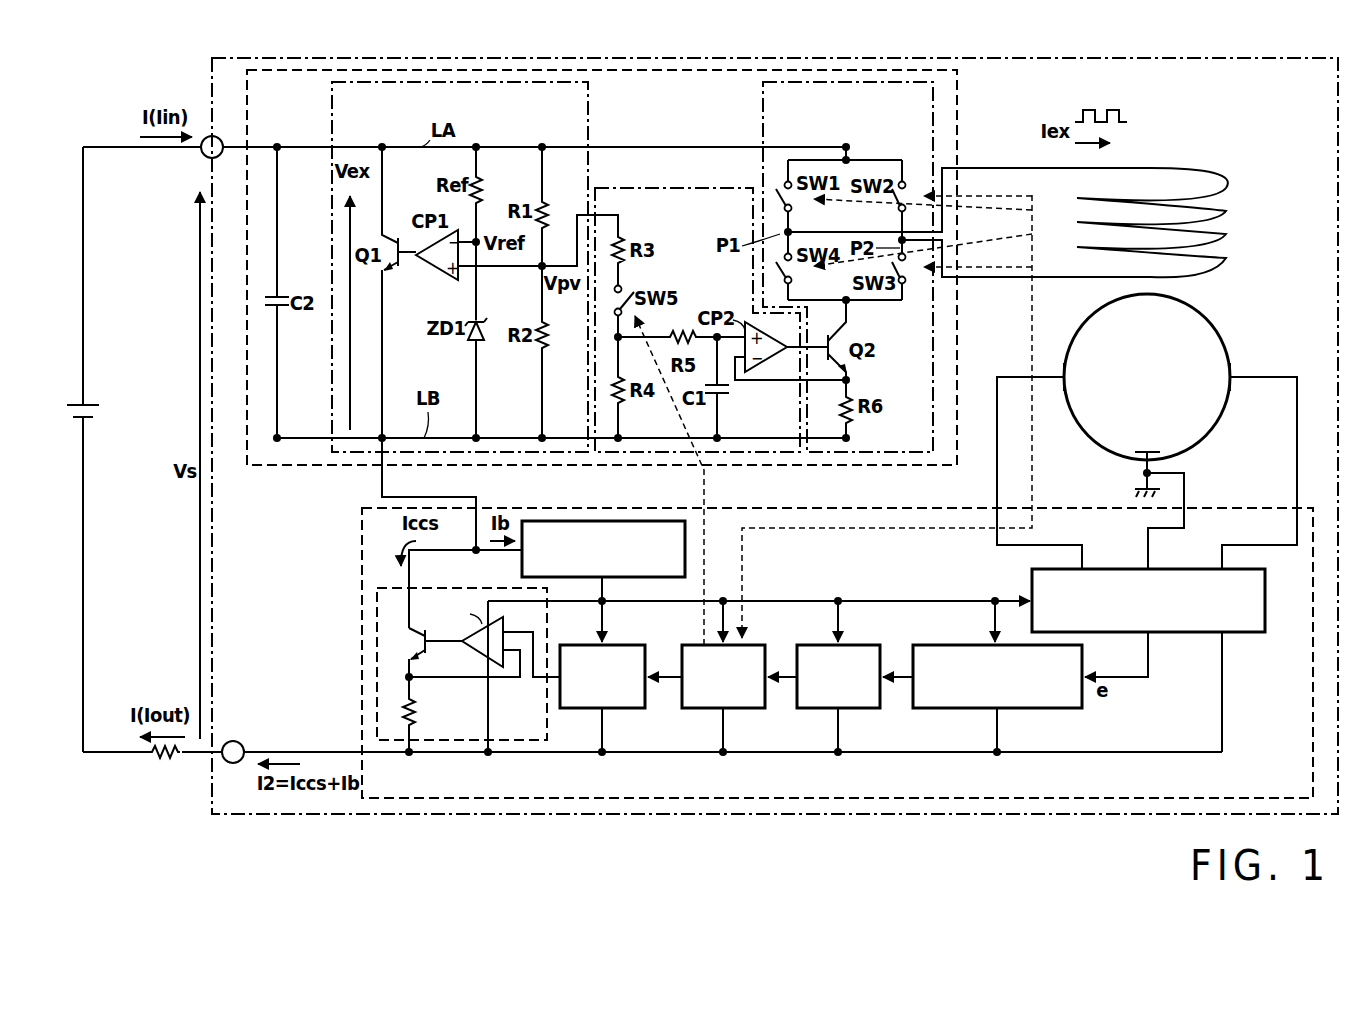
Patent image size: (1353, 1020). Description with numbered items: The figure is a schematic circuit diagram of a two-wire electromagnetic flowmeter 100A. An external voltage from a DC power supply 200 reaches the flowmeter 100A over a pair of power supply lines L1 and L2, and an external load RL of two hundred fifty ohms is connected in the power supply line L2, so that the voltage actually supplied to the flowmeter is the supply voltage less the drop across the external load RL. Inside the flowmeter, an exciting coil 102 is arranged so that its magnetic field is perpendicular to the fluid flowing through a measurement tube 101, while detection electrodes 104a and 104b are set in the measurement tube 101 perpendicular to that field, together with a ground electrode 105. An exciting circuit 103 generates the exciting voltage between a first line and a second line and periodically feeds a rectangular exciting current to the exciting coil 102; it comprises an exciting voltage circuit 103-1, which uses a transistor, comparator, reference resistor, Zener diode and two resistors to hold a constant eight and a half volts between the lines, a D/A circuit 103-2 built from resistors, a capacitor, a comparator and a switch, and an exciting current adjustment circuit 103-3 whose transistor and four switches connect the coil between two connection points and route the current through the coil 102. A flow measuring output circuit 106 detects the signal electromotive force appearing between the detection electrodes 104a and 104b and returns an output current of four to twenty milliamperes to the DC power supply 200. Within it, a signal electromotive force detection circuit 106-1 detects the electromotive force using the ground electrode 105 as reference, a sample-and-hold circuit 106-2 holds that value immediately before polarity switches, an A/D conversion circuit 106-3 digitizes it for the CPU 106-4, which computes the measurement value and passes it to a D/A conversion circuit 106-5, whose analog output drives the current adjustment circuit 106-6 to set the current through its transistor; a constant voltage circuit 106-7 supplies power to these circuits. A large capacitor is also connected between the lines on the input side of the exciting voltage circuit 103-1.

The two-wire electromagnetic flowmeter 100A is at (1252, 58).
The measurement tube 101 is at (1225, 330).
The exciting coil 102 is at (1226, 192).
The exciting circuit 103 is at (746, 70).
The exciting voltage circuit 103-1 is at (405, 70).
The D/A circuit 103-2 is at (664, 188).
The exciting current adjustment circuit 103-3 is at (876, 82).
The detection electrode 104a is at (1066, 380).
The detection electrode 104b is at (1228, 380).
The ground electrode 105 is at (1147, 450).
The flow measuring output circuit 106 is at (905, 800).
The signal electromotive force detection circuit 106-1 is at (1240, 634).
The sample-and-hold circuit 106-2 is at (1040, 710).
The A/D conversion circuit 106-3 is at (868, 710).
The CPU 106-4 is at (750, 710).
The D/A conversion circuit 106-5 is at (636, 710).
The current adjustment circuit 106-6 is at (520, 742).
The constant voltage circuit 106-7 is at (522, 564).
The DC power supply 200 is at (88, 400).
The power supply line L1 is at (163, 150).
The power supply line L2 is at (110, 755).
The external load RL is at (165, 767).